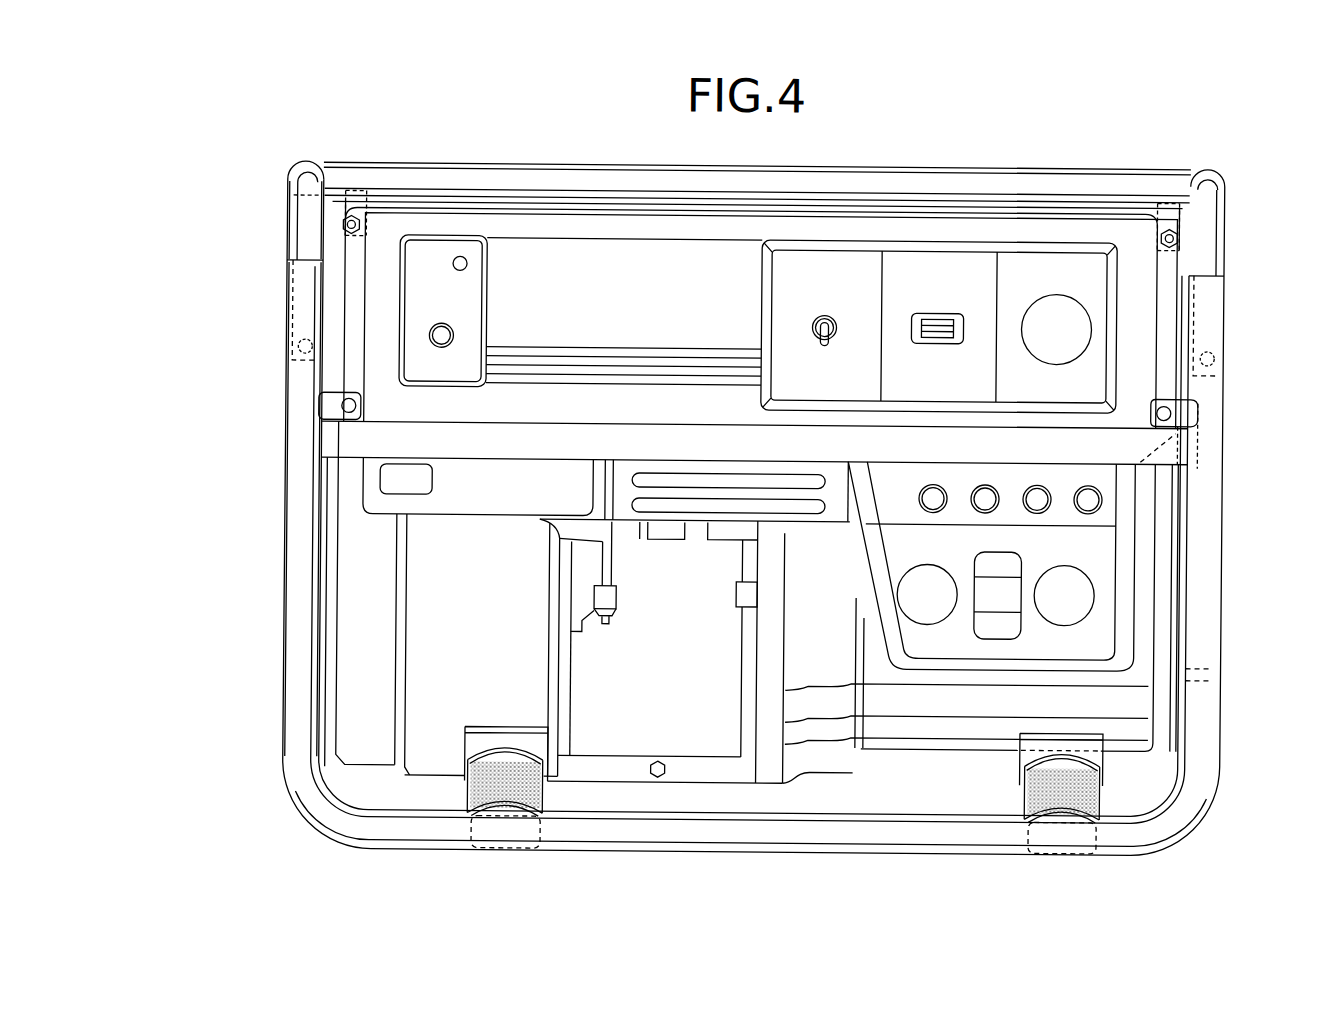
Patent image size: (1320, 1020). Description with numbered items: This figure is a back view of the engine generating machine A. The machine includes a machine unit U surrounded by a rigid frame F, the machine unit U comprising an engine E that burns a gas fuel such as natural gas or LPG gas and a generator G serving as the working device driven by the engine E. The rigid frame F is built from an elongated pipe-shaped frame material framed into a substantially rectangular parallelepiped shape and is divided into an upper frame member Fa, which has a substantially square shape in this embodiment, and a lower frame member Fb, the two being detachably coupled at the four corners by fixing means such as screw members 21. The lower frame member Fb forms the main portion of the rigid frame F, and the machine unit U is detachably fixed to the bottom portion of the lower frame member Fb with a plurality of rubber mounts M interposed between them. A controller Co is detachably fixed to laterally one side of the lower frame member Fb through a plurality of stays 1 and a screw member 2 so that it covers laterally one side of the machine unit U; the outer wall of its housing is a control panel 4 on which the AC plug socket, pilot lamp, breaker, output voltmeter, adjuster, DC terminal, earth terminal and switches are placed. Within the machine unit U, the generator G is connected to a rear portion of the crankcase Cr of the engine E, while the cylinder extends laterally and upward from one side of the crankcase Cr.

The stay 1 is at (335, 205).
The screw member 2 is at (360, 232).
The control panel 4 is at (957, 278).
The screw member 21 is at (318, 357).
The engine generating machine A is at (608, 158).
The controller Co is at (728, 227).
The crankcase Cr is at (603, 777).
The engine E is at (725, 786).
The rigid frame F is at (206, 252).
The upper frame member Fa is at (293, 233).
The lower frame member Fb is at (283, 362).
The generator G is at (955, 732).
The rubber mount M is at (479, 795).
The machine unit U is at (917, 767).